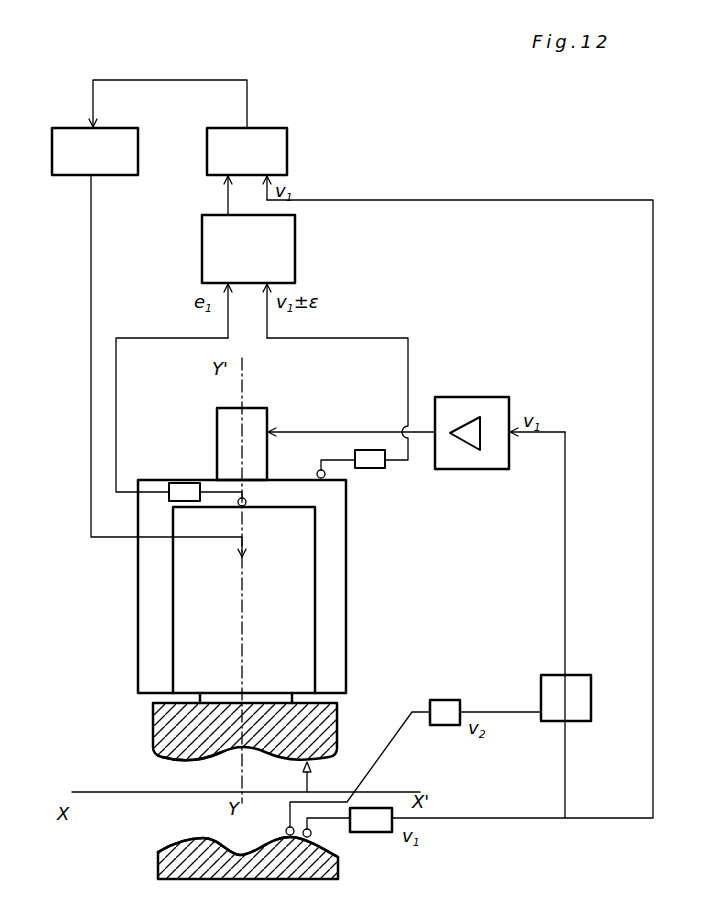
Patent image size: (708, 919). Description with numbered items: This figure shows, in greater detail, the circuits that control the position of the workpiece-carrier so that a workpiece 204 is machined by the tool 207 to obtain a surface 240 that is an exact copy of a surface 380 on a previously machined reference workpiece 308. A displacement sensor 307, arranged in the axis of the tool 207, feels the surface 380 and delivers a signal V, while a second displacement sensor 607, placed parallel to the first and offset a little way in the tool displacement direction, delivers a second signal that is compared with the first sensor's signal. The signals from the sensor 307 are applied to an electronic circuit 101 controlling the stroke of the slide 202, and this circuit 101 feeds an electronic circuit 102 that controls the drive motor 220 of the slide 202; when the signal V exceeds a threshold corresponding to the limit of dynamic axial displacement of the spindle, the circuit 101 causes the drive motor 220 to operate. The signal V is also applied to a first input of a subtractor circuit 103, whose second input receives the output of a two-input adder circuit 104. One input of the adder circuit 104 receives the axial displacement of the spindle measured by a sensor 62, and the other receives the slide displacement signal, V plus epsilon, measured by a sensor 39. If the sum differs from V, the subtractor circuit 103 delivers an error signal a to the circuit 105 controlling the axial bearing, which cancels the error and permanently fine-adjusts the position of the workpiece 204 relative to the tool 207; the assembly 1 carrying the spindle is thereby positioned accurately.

The axial bearing control circuit 105 is at (63, 135).
The subtractor circuit 103 is at (273, 135).
The adder circuit 104 is at (280, 247).
The drive motor 220 is at (210, 431).
The sensor 62 is at (180, 490).
The sensor 39 is at (378, 468).
The electronic circuit 102 is at (493, 470).
The slide 202 is at (345, 555).
The measuring device 1 is at (155, 629).
The workpiece 204 is at (158, 733).
The surface 240 is at (200, 768).
The tool 207 is at (312, 767).
The second displacement sensor 607 is at (441, 700).
The electronic circuit 101 is at (550, 675).
The surface 380 is at (198, 838).
The reference workpiece 308 is at (160, 866).
The displacement sensor 307 is at (378, 833).